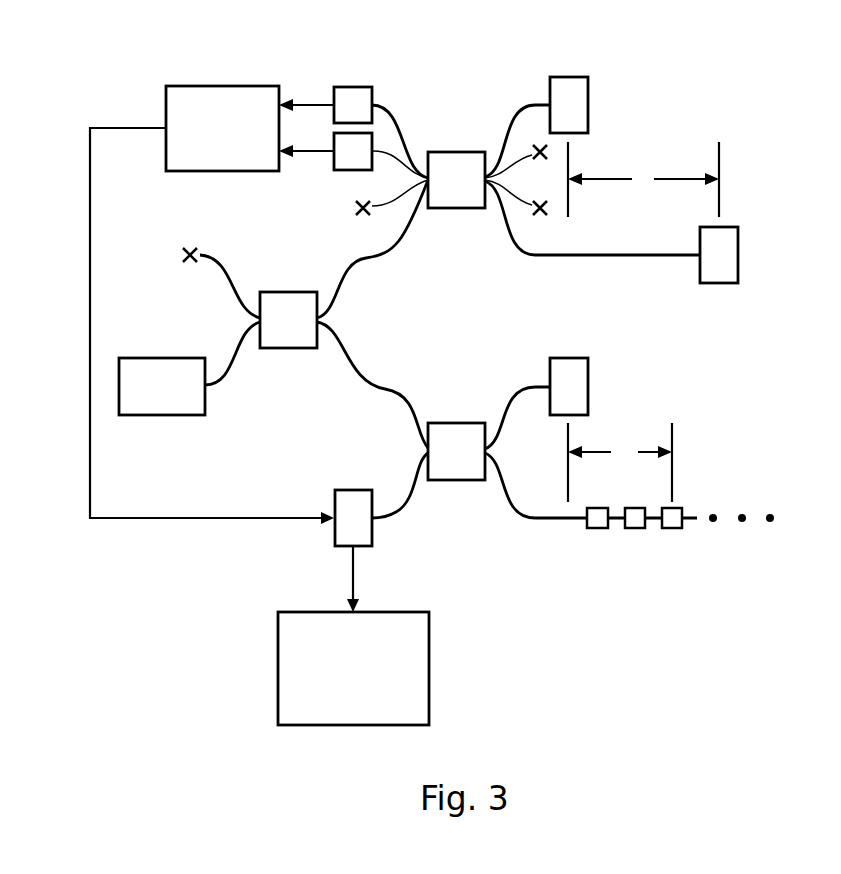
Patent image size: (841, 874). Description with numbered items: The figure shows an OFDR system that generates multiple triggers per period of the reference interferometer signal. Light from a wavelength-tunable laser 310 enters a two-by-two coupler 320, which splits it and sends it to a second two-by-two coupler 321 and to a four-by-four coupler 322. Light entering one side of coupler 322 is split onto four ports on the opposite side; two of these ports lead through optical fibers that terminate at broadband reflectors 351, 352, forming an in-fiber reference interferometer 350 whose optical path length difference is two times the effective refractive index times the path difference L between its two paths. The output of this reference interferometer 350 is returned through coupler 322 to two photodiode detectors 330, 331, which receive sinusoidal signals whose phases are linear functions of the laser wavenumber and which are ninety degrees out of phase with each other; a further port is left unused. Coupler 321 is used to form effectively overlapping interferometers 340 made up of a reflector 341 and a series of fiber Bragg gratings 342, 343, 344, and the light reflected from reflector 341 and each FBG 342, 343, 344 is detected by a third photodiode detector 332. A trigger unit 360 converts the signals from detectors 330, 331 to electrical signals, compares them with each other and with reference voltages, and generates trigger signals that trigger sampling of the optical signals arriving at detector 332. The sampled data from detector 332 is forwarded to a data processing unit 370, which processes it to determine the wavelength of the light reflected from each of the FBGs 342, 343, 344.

The wavelength-tunable laser 310 is at (147, 415).
The optical coupler 320 is at (283, 292).
The optical coupler 321 is at (447, 423).
The optical coupler 322 is at (447, 152).
The photodiode detector 330 is at (351, 87).
The photodiode detector 331 is at (345, 170).
The photodiode detector 332 is at (352, 490).
The FBG-array-based interferometer 340 is at (772, 563).
The reflector 341 is at (588, 387).
The FBG 342 is at (592, 528).
The FBG 343 is at (636, 528).
The FBG 344 is at (670, 528).
The in-fiber interferometer 350 is at (738, 62).
The broadband reflector 351 is at (588, 105).
The broadband reflector 352 is at (738, 255).
The trigger unit 360 is at (205, 86).
The data processing unit 370 is at (278, 652).